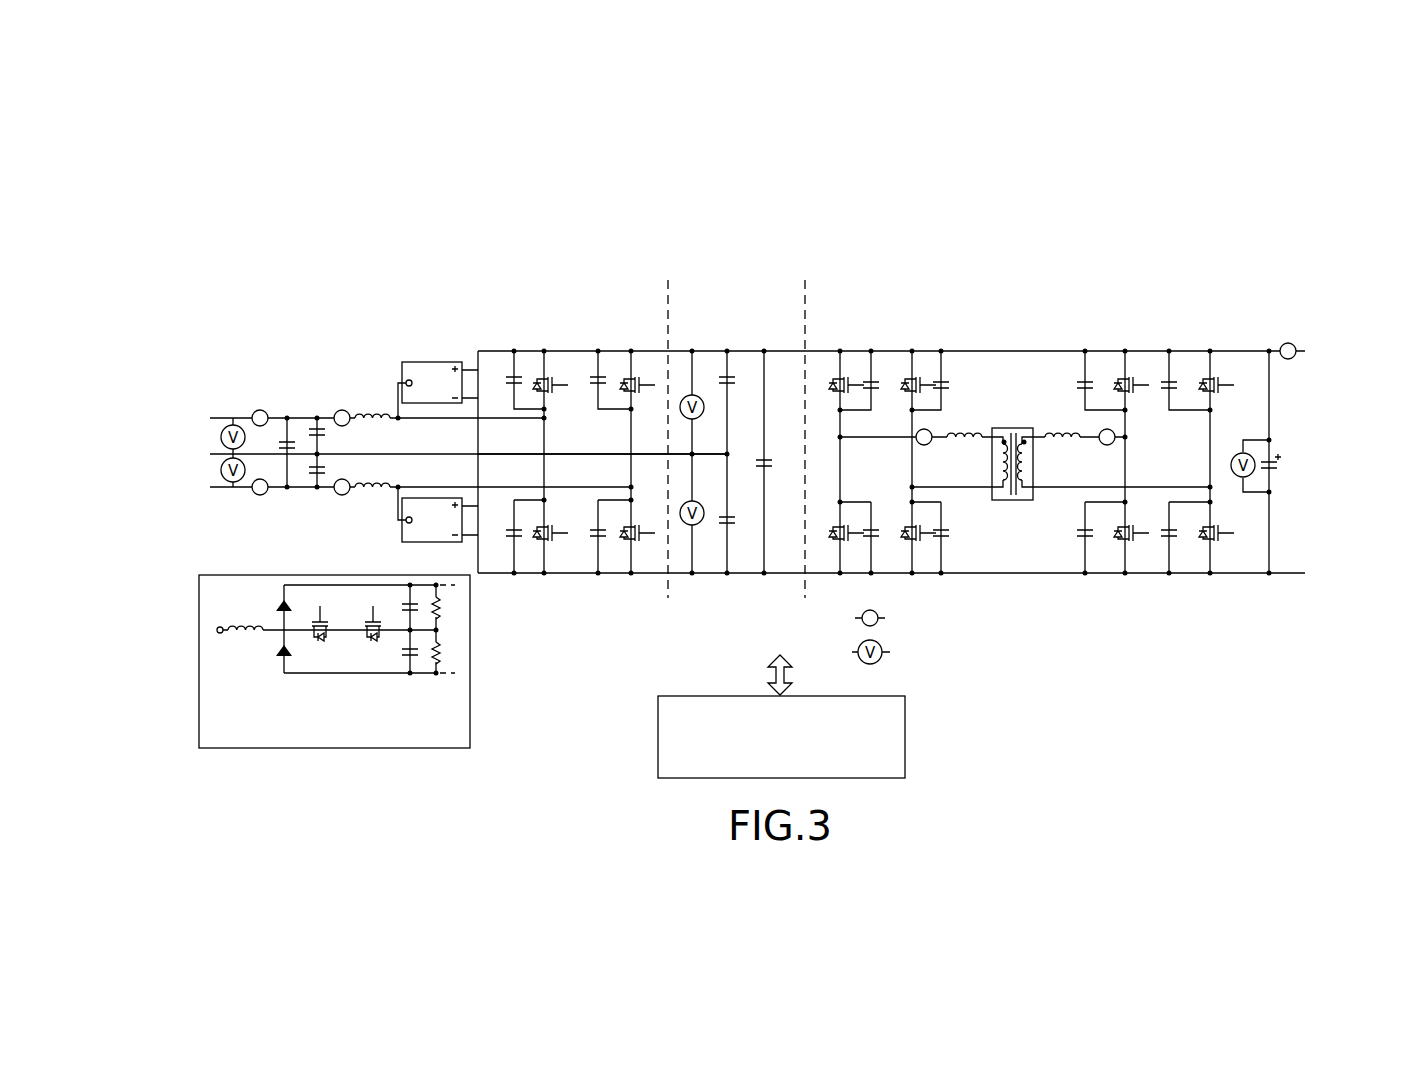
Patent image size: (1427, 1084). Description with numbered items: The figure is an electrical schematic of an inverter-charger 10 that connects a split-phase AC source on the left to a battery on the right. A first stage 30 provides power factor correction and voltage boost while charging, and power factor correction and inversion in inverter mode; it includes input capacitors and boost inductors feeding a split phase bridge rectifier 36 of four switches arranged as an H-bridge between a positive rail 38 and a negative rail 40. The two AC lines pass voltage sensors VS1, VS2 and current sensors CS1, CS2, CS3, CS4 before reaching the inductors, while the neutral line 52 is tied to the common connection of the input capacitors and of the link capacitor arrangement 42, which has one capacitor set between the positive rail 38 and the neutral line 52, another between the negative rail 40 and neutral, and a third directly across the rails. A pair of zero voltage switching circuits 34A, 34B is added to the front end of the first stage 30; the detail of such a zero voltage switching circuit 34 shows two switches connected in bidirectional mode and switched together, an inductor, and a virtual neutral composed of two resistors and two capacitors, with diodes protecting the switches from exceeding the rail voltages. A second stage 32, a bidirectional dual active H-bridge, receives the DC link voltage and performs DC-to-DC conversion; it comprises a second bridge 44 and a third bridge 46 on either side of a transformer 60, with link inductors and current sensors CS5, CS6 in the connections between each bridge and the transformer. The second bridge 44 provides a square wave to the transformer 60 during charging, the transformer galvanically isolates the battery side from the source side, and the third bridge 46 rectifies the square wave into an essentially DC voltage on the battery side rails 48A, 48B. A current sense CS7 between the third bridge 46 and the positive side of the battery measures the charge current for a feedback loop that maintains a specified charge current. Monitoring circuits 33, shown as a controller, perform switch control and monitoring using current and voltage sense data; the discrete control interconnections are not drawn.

The inverter-charger 10 is at (548, 212).
The first stage 30 is at (459, 344).
The second stage 32 is at (1004, 344).
The monitoring circuits 33 is at (905, 742).
The zero voltage switching circuit 34 is at (381, 767).
The zero voltage switching circuit 34A is at (402, 364).
The zero voltage switching circuit 34B is at (440, 543).
The split phase bridge rectifier 36 is at (552, 590).
The positive rail 38 is at (640, 350).
The negative rail 40 is at (648, 578).
The link capacitor arrangement 42 is at (725, 319).
The second bridge 44 is at (878, 326).
The third bridge 46 is at (1172, 328).
The battery side rail 48A is at (1240, 351).
The battery side rail 48B is at (1163, 578).
The neutral line 52 is at (556, 453).
The transformer 60 is at (1017, 580).
The voltage sensor line 1 VS1 is at (232, 424).
The voltage sensor line 2 VS2 is at (232, 483).
The current sensor CS1 is at (261, 409).
The current sensor CS2 is at (336, 412).
The current sensor CS3 is at (262, 496).
The current sensor CS4 is at (342, 496).
The current sensor CS5 is at (931, 430).
The current sensor CS6 is at (1100, 430).
The current sense CS7 is at (1290, 343).